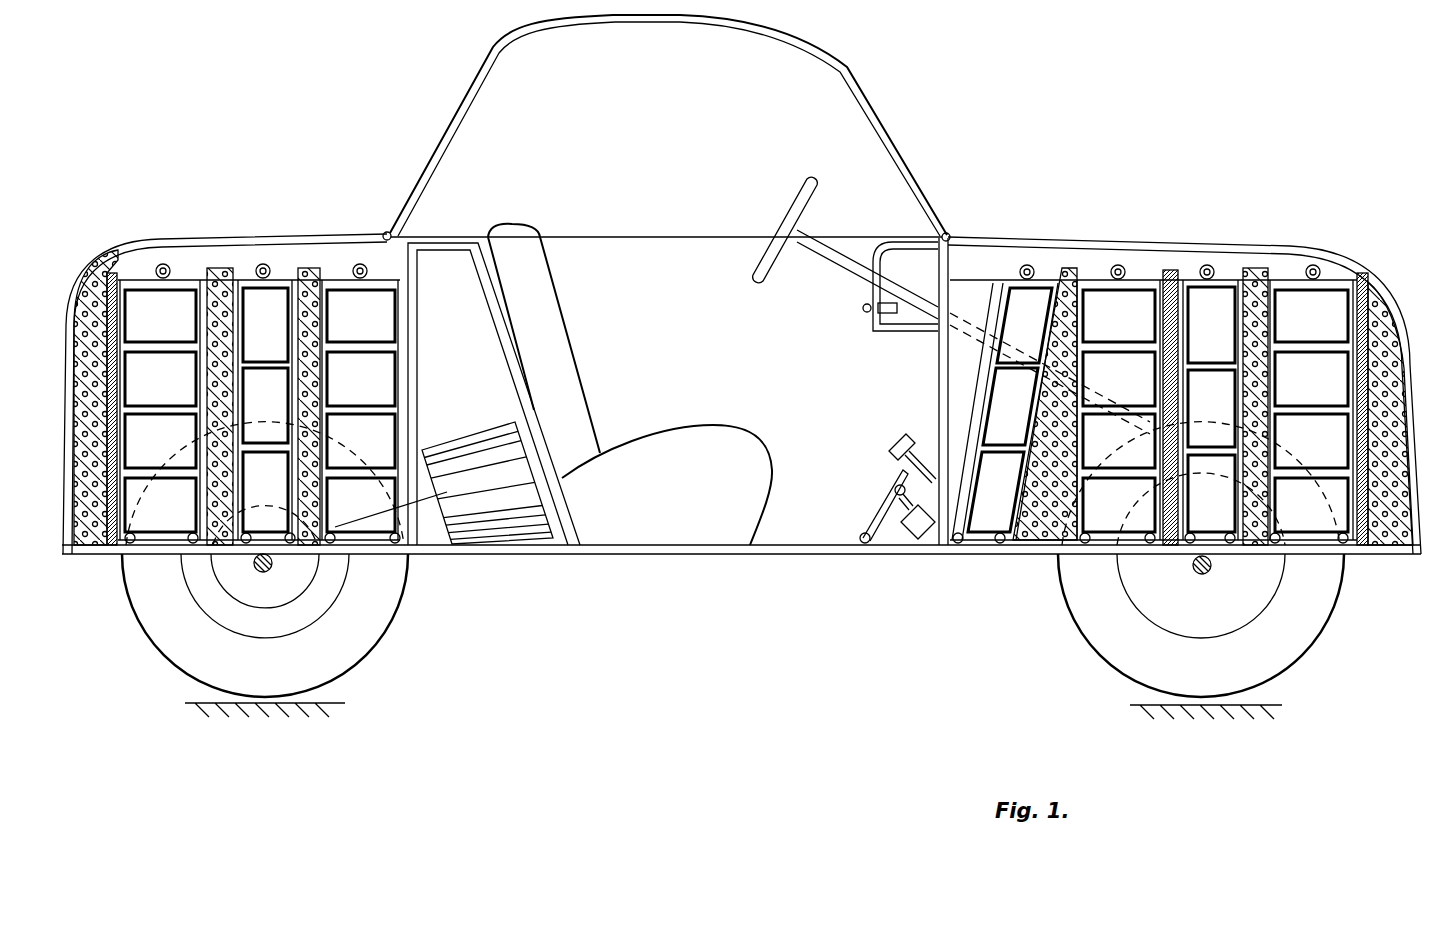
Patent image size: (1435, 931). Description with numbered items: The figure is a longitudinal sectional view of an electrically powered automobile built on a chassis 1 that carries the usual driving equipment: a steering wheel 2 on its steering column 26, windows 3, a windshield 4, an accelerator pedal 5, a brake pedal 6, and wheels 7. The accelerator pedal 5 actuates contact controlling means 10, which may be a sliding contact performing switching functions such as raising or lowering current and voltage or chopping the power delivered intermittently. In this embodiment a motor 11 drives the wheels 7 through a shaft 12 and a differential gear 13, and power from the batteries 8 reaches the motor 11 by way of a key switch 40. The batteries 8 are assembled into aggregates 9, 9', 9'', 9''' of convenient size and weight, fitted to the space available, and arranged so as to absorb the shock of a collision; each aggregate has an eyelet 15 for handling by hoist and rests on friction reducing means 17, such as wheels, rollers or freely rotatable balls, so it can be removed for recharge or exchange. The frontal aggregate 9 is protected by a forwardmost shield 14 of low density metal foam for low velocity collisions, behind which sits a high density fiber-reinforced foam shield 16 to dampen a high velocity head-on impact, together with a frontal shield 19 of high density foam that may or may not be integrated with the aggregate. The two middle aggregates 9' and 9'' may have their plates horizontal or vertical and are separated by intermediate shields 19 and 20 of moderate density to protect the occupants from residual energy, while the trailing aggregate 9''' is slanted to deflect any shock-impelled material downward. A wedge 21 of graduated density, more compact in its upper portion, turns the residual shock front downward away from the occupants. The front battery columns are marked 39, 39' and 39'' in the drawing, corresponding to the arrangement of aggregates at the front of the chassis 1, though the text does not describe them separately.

The chassis 1 is at (686, 548).
The steering wheel 2 is at (802, 182).
The windows 3 is at (463, 107).
The windshield 4 is at (862, 108).
The accelerator pedal 5 is at (892, 500).
The brake pedal 6 is at (893, 437).
The wheels 7 is at (402, 600).
The batteries 8 is at (186, 297).
The battery aggregate 9 is at (1311, 362).
The battery aggregate 9' is at (1210, 362).
The battery aggregate 9'' is at (1118, 362).
The battery aggregate 9''' is at (1005, 362).
The contact controlling means 10 is at (922, 541).
The motor 11 is at (448, 452).
The shaft 12 is at (432, 504).
The differential gear 13 is at (266, 604).
The forwardmost foam shield 14 is at (1405, 347).
The eyelet 15 is at (156, 270).
The high density foam shield 16 is at (1363, 546).
The friction reducing means 17 is at (280, 548).
The frontal shield 19 is at (1263, 270).
The intermediate shield 20 is at (1170, 272).
The wedge 21 is at (1063, 270).
The steering column 26 is at (815, 249).
The front battery column 39 is at (160, 362).
The front battery column 39' is at (265, 362).
The front battery column 39'' is at (360, 362).
The key switch 40 is at (862, 310).